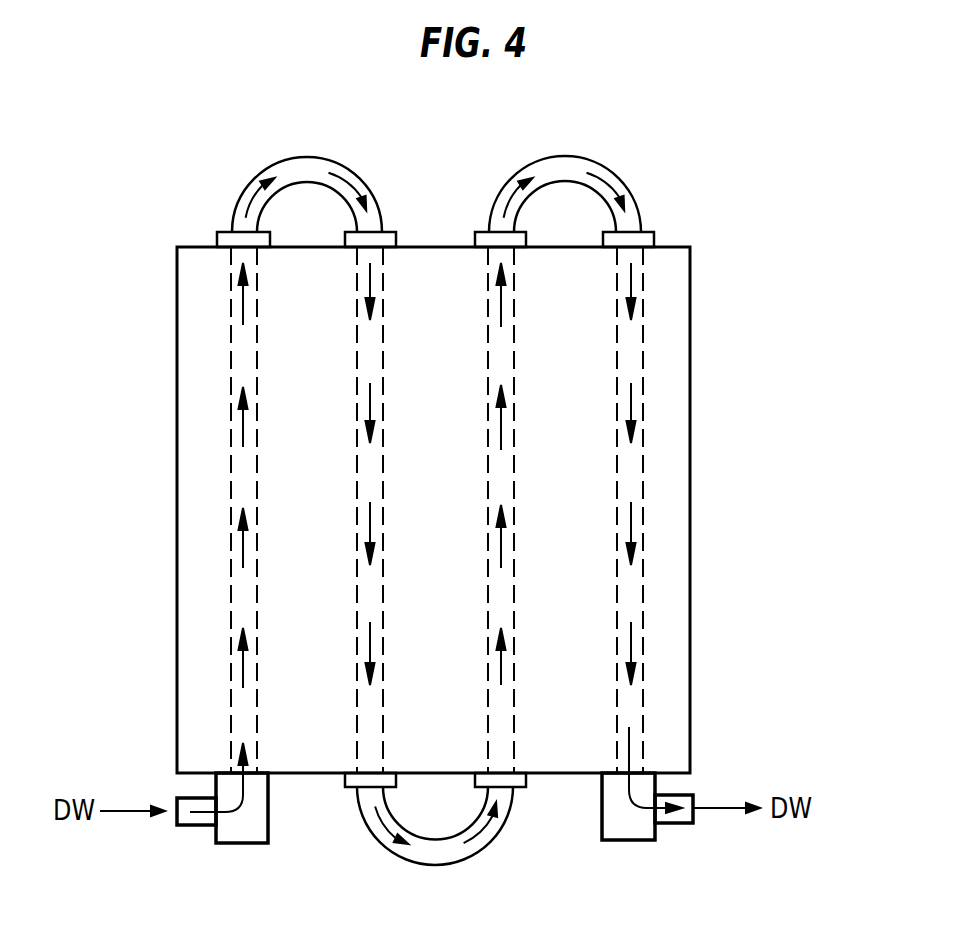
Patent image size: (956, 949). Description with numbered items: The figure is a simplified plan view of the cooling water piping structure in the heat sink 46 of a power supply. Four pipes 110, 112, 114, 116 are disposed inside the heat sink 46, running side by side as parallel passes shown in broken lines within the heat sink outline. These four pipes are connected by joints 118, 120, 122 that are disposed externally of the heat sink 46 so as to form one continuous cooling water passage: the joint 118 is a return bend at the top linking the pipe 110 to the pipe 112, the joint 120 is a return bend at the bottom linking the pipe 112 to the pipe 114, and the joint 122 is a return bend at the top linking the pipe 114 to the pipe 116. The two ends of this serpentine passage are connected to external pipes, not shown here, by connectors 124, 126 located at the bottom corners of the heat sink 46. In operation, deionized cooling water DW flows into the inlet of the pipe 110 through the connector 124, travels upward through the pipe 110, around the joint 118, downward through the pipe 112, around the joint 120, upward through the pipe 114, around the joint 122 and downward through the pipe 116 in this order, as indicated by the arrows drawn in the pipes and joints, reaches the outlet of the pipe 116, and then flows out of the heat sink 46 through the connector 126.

The heat sink 46 is at (690, 305).
The pipe 110 is at (231, 343).
The pipe 112 is at (357, 607).
The pipe 114 is at (514, 368).
The pipe 116 is at (643, 545).
The joint 118 is at (307, 157).
The joint 120 is at (437, 865).
The joint 122 is at (564, 155).
The connector 124 is at (245, 842).
The connector 126 is at (625, 842).